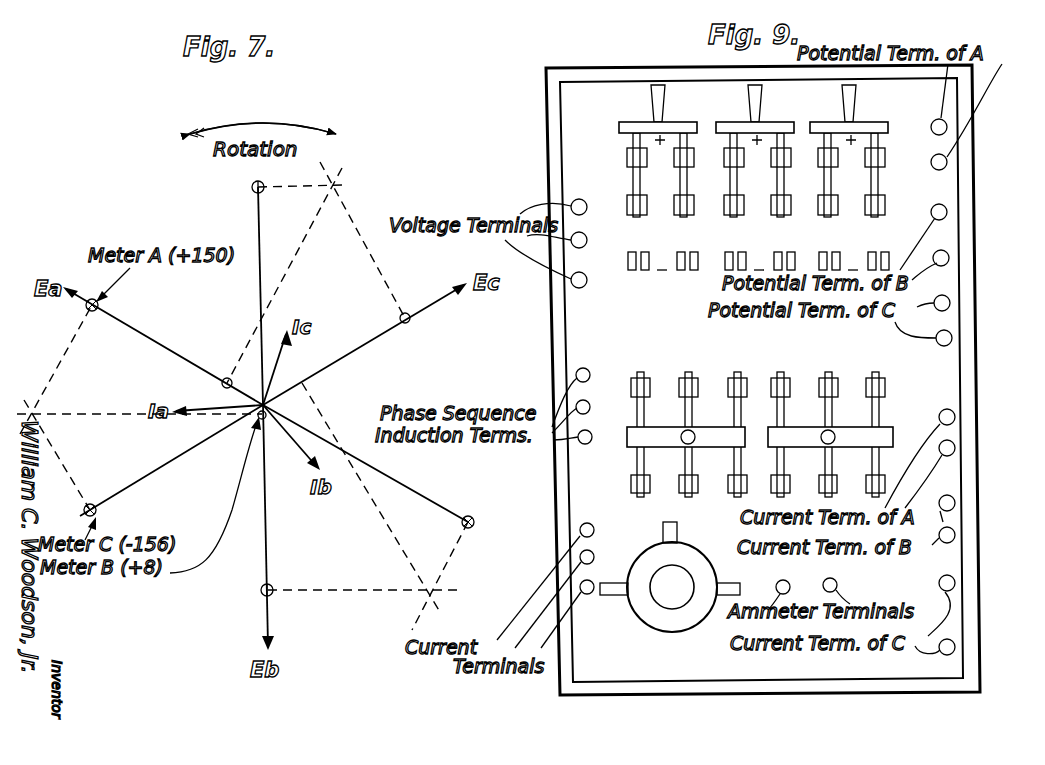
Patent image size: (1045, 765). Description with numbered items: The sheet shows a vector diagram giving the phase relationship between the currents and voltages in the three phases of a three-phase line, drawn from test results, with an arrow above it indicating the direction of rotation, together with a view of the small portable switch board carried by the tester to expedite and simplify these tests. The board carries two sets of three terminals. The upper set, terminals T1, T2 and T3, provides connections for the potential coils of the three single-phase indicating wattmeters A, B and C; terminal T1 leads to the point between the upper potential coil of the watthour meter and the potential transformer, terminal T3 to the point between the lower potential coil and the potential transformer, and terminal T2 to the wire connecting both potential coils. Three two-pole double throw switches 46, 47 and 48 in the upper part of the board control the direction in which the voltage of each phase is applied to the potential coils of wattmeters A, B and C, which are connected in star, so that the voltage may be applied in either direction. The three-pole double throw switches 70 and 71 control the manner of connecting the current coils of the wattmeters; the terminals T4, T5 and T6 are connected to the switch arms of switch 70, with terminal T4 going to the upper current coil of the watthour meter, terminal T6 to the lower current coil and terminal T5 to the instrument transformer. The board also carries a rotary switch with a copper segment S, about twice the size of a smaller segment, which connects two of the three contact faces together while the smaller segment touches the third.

The two-pole double throw switch 46 is at (633, 127).
The two-pole double throw switch 47 is at (765, 125).
The two-pole double throw switch 48 is at (869, 123).
The three-pole double throw switch 70 is at (637, 432).
The three-pole double throw switch 71 is at (875, 435).
The copper segment S is at (676, 580).
The terminal T1 is at (585, 202).
The terminal T2 is at (587, 239).
The terminal T3 is at (587, 279).
The terminal T4 is at (592, 526).
The terminal T5 is at (593, 554).
The terminal T6 is at (593, 583).